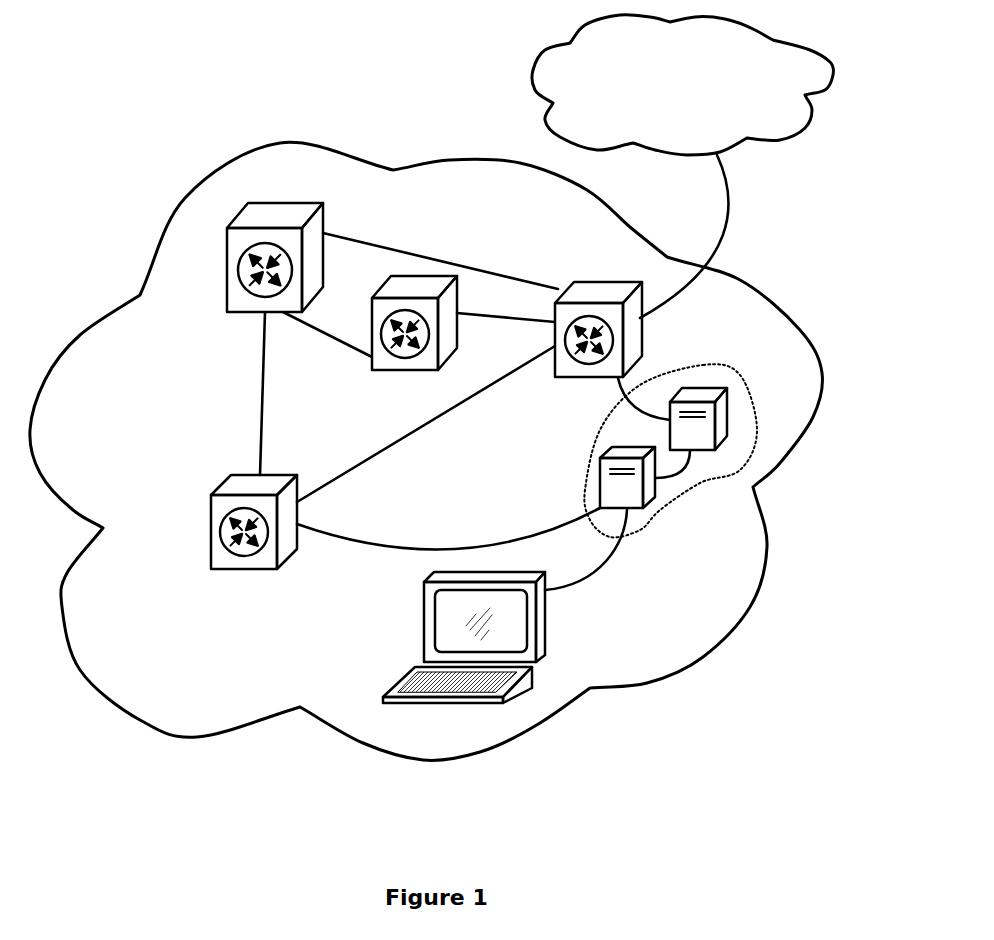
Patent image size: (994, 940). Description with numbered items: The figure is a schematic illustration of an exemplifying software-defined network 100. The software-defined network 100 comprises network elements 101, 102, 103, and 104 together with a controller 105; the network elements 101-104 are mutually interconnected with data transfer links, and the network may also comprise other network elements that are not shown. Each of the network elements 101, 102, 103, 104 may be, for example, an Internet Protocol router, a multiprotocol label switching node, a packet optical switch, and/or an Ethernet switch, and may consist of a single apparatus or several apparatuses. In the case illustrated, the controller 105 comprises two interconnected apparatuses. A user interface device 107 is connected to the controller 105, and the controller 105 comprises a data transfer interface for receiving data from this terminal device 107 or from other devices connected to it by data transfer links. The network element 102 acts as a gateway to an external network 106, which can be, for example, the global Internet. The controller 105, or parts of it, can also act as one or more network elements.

The software-defined network 100 is at (442, 162).
The network element 101 is at (211, 540).
The network element 102 is at (600, 281).
The network element 103 is at (383, 372).
The network element 104 is at (245, 312).
The controller 105 is at (703, 365).
The external network 106 is at (702, 93).
The user interface device 107 is at (424, 628).